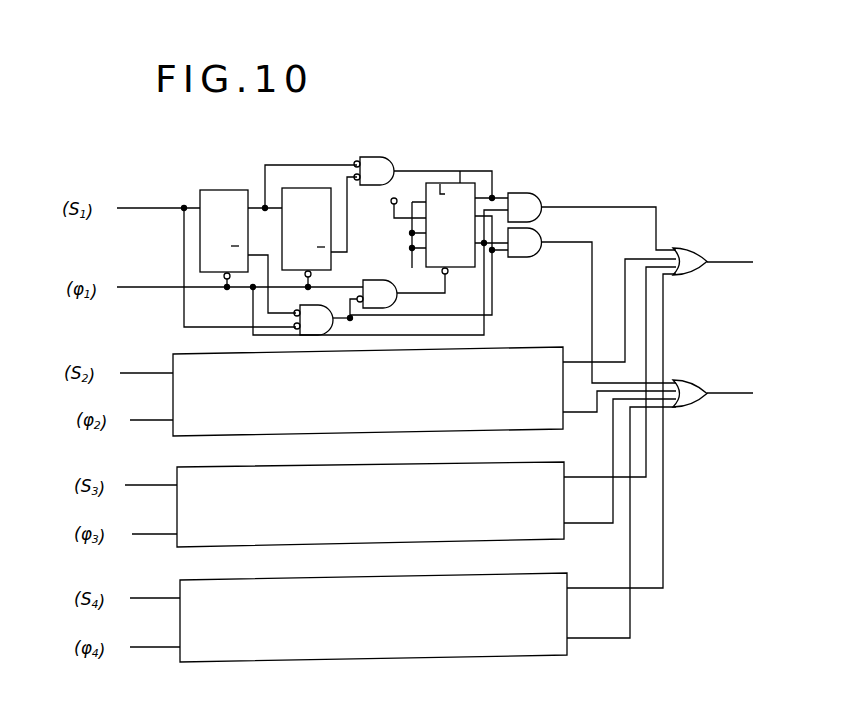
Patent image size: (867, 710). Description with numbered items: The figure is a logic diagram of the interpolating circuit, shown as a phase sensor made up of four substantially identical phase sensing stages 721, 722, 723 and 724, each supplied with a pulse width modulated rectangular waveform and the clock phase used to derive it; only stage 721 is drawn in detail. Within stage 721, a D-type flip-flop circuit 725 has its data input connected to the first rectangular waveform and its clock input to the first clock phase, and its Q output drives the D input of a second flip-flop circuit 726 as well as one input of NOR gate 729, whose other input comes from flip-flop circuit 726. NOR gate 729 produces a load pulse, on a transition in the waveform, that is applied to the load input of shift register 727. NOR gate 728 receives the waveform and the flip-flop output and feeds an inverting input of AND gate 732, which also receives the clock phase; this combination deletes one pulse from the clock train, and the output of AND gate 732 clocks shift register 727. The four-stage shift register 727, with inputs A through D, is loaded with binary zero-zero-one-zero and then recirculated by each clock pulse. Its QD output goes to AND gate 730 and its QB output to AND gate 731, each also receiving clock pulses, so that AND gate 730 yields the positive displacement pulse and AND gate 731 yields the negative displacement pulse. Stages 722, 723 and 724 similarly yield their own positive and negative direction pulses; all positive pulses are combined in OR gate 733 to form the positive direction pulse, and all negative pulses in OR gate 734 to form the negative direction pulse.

The phase sensing stage 721 is at (212, 160).
The phase sensing stage 722 is at (173, 363).
The phase sensing stage 723 is at (185, 475).
The phase sensing stage 724 is at (187, 587).
The flip-flop circuit 725 is at (225, 198).
The flip-flop circuit 726 is at (329, 190).
The shift register 727 is at (452, 183).
The NOR gate 728 is at (338, 297).
The NOR gate 729 is at (387, 158).
The AND gate 730 is at (531, 184).
The AND gate 731 is at (525, 258).
The AND gate 732 is at (385, 281).
The OR gate 733 is at (707, 245).
The OR gate 734 is at (710, 372).